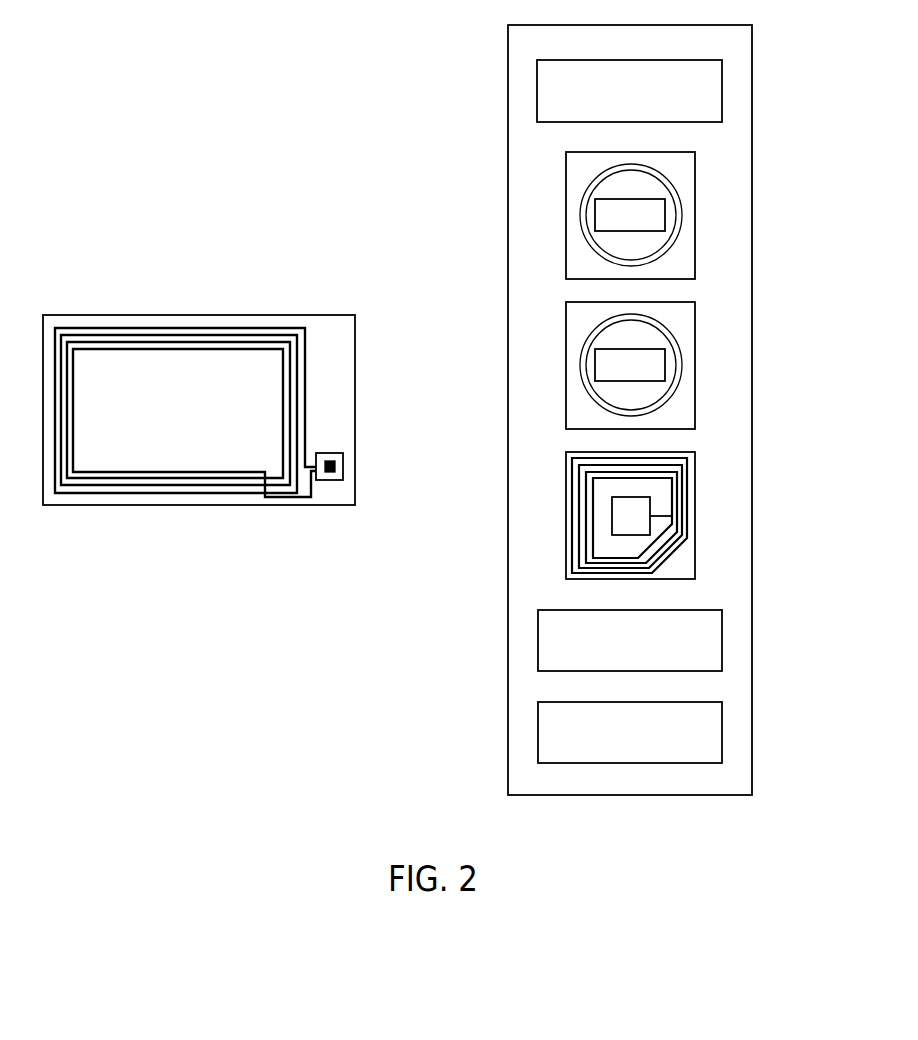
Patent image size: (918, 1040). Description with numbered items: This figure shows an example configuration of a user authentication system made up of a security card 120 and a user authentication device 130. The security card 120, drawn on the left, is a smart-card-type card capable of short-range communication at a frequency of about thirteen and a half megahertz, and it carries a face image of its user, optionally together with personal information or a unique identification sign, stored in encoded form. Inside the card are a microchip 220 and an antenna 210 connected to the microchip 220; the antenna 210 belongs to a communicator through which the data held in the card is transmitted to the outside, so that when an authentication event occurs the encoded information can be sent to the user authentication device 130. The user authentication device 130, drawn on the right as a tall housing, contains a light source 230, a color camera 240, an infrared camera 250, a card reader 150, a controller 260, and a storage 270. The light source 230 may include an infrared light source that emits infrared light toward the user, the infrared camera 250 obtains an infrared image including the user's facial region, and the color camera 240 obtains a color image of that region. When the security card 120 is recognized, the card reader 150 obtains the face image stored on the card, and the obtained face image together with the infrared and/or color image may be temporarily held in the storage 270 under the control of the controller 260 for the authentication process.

The security card 120 is at (355, 341).
The antenna 210 is at (175, 494).
The microchip 220 is at (343, 466).
The user authentication device 130 is at (753, 38).
The light source 230 is at (722, 91).
The color camera 240 is at (695, 214).
The infrared camera 250 is at (695, 364).
The card reader 150 is at (695, 514).
The controller 260 is at (722, 638).
The storage 270 is at (722, 730).